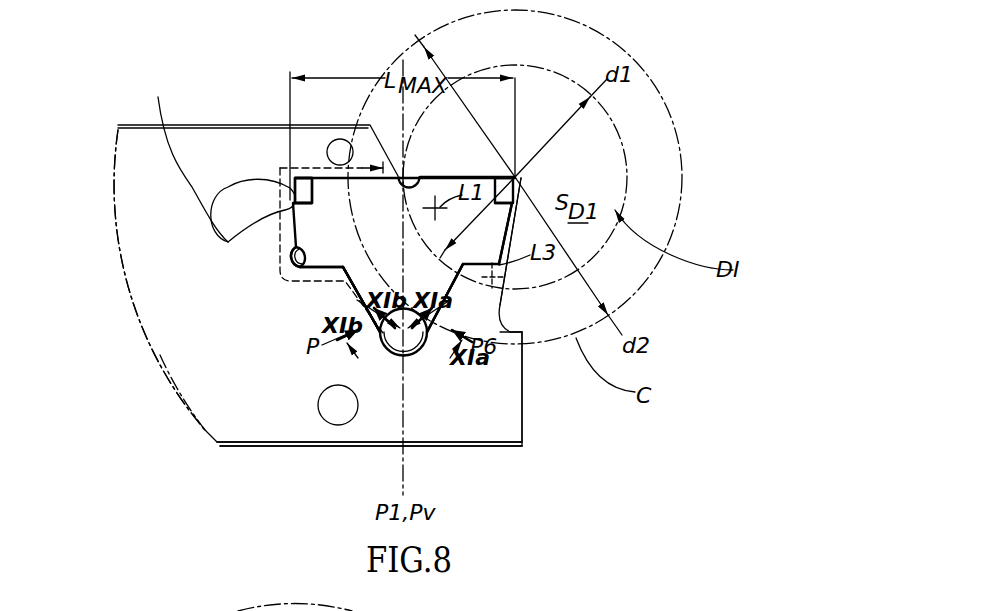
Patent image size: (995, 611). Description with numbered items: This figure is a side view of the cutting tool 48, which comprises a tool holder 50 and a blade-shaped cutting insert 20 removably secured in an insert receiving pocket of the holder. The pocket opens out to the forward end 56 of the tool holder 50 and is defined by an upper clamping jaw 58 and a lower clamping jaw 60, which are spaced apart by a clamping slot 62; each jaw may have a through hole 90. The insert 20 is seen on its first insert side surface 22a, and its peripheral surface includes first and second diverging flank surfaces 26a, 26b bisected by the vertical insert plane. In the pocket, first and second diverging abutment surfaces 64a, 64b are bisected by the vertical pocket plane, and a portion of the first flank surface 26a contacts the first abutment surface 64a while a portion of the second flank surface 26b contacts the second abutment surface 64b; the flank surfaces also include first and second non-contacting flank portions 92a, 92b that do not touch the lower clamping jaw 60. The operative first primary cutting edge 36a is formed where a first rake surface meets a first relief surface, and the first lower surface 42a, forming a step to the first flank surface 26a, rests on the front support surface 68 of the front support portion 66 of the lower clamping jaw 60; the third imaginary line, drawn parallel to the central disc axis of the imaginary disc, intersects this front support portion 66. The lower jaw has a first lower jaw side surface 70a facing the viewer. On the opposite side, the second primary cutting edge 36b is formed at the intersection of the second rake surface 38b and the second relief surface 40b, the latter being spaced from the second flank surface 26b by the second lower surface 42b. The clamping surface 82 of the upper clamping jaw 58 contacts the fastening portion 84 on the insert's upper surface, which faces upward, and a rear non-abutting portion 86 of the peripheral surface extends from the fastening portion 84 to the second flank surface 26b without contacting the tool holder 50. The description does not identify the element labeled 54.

The cutting tool 48 is at (127, 114).
The clamping slot 62 is at (184, 158).
The second primary cutting edge 36b is at (295, 177).
The second rake surface 38b is at (307, 148).
The upper clamping jaw 58 is at (308, 183).
The through hole 90 is at (338, 150).
The fastening portion 84 is at (403, 176).
The clamping surface 82 is at (417, 178).
The second relief surface 40b is at (245, 208).
The cutting insert 20 is at (316, 233).
The rear non-abutting portion 86 is at (281, 243).
The second lower surface 42b is at (306, 275).
The first insert side surface 22a is at (346, 288).
The second abutment surface 64b is at (367, 294).
The first abutment surface 64a is at (435, 294).
The second flank surface 26b is at (373, 341).
The first flank surface 26a is at (433, 341).
The second non-contacting flank portion 92b is at (352, 306).
The first non-contacting flank portion 92a is at (486, 298).
The front support surface 68 is at (496, 254).
The first lower surface 42a is at (483, 296).
The front support portion 66 is at (512, 334).
The first lower jaw side surface 70a is at (457, 421).
The forward end 56 is at (527, 408).
The lower clamping jaw 60 is at (292, 402).
The body peripheral surface 54 is at (167, 300).
The tool holder 50 is at (197, 365).
The first primary cutting edge 36a is at (517, 177).